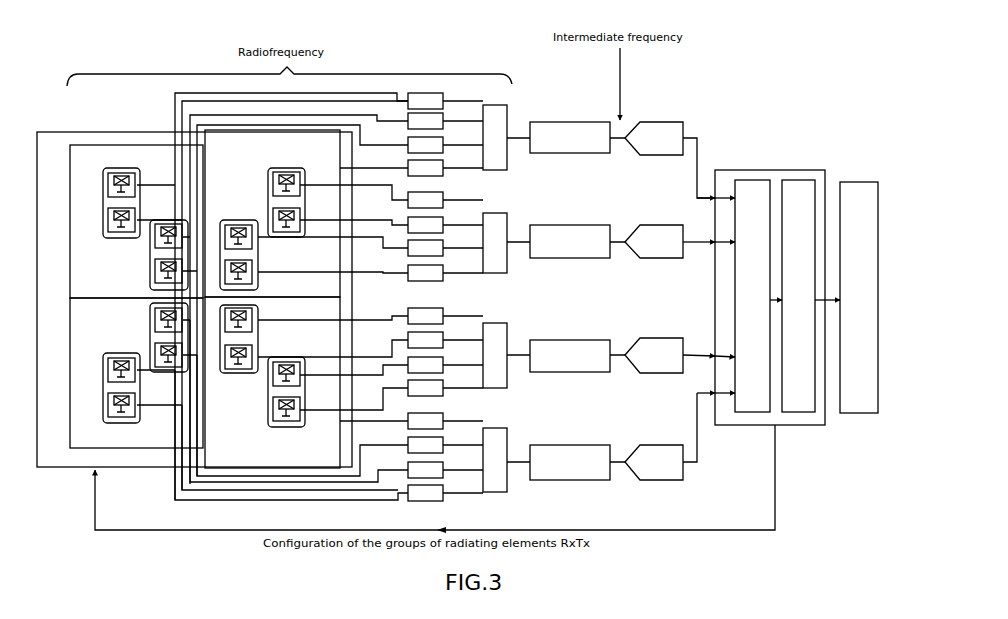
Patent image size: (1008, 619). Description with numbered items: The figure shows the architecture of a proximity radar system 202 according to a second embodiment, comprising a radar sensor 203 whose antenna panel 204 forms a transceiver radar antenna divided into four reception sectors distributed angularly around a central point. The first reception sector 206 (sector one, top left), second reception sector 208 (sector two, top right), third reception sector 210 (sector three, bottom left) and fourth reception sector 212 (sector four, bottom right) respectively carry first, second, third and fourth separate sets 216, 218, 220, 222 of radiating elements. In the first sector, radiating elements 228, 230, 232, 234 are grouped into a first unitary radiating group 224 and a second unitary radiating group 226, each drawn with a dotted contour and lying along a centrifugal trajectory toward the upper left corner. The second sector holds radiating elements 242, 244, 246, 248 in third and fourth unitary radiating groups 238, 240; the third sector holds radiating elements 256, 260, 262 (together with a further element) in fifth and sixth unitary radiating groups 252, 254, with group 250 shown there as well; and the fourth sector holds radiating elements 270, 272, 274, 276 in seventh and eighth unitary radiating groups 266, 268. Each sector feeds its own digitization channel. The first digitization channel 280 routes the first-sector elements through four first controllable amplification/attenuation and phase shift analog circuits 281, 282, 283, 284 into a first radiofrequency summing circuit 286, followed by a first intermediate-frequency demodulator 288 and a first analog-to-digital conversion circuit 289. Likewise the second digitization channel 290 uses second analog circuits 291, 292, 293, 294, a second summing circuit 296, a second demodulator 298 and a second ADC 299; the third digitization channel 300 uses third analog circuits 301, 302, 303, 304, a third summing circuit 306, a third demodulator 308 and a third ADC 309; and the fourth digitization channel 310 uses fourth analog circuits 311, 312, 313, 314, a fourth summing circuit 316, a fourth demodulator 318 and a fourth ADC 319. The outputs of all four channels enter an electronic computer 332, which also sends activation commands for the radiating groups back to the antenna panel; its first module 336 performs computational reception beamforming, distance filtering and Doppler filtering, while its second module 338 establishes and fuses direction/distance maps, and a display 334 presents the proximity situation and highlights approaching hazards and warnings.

The proximity radar system 202 is at (809, 59).
The radar sensor 203 is at (86, 49).
The antenna panel 204 is at (58, 468).
The first reception sector 206 is at (70, 178).
The second reception sector 208 is at (348, 252).
The third reception sector 210 is at (70, 328).
The fourth reception sector 212 is at (300, 457).
The first set of radiating elements 216 is at (101, 281).
The second set of radiating elements 218 is at (229, 173).
The third set of radiating elements 220 is at (99, 328).
The fourth set of radiating elements 222 is at (234, 428).
The first unitary radiating group 224 is at (150, 260).
The second unitary radiating group 226 is at (150, 284).
The radiating element 228 is at (108, 214).
The radiating element 230 is at (150, 238).
The radiating element 232 is at (104, 236).
The radiating element 234 is at (108, 182).
The third unitary radiating group 238 is at (258, 257).
The fourth unitary radiating group 240 is at (305, 180).
The radiating element 242 is at (258, 278).
The radiating element 244 is at (239, 221).
The radiating element 246 is at (305, 216).
The radiating element 248 is at (284, 173).
The radiating element 250 is at (168, 320).
The fifth unitary radiating group 252 is at (150, 344).
The sixth unitary radiating group 254 is at (108, 396).
The radiating element 256 is at (178, 385).
The radiating element 260 is at (108, 368).
The radiating element 262 is at (110, 422).
The seventh unitary radiating group 266 is at (258, 335).
The eighth unitary radiating group 268 is at (305, 396).
The radiating element 270 is at (258, 316).
The radiating element 272 is at (239, 374).
The radiating element 274 is at (305, 365).
The radiating element 276 is at (300, 415).
The first digitization channel 280 is at (549, 181).
The first controllable amplification/attenuation and phase shift analog circuit 281 is at (446, 166).
The first controllable amplification/attenuation and phase shift analog circuit 282 is at (446, 143).
The first controllable amplification/attenuation and phase shift analog circuit 283 is at (446, 118).
The first controllable amplification/attenuation and phase shift analog circuit 284 is at (446, 96).
The first radiofrequency summing circuit 286 is at (560, 153).
The first intermediate-frequency demodulator 288 is at (491, 150).
The first analog-to-digital ADC conversion circuit 289 is at (655, 155).
The second digitization channel 290 is at (549, 285).
The second controllable amplification/attenuation and phase shift analog circuit 291 is at (446, 271).
The second controllable amplification/attenuation and phase shift analog circuit 292 is at (446, 248).
The second controllable amplification/attenuation and phase shift analog circuit 293 is at (446, 223).
The second controllable amplification/attenuation and phase shift analog circuit 294 is at (446, 200).
The second radiofrequency summing circuit 296 is at (560, 258).
The second intermediate-frequency demodulator 298 is at (491, 251).
The second analog-to-digital ADC conversion circuit 299 is at (655, 258).
The third digitization channel 300 is at (551, 502).
The third controllable amplification/attenuation and phase shift analog circuit 301 is at (446, 421).
The third controllable amplification/attenuation and phase shift analog circuit 302 is at (446, 445).
The third controllable amplification/attenuation and phase shift analog circuit 303 is at (446, 470).
The third controllable amplification/attenuation and phase shift analog circuit 304 is at (446, 493).
The third radiofrequency summing circuit 306 is at (560, 480).
The third intermediate-frequency demodulator 308 is at (492, 469).
The third analog-to-digital ADC conversion circuit 309 is at (655, 480).
The fourth digitization channel 310 is at (551, 398).
The fourth controllable amplification/attenuation and phase shift analog circuit 311 is at (446, 316).
The fourth controllable amplification/attenuation and phase shift analog circuit 312 is at (446, 340).
The fourth controllable amplification/attenuation and phase shift analog circuit 313 is at (446, 365).
The fourth controllable amplification/attenuation and phase shift analog circuit 314 is at (446, 388).
The fourth radiofrequency summing circuit 316 is at (492, 365).
The fourth intermediate-frequency demodulator 318 is at (560, 372).
The fourth analog-to-digital ADC conversion circuit 319 is at (655, 373).
The electronic computer 332 is at (768, 170).
The display 334 is at (858, 182).
The first module 336 is at (750, 412).
The second module 338 is at (798, 412).